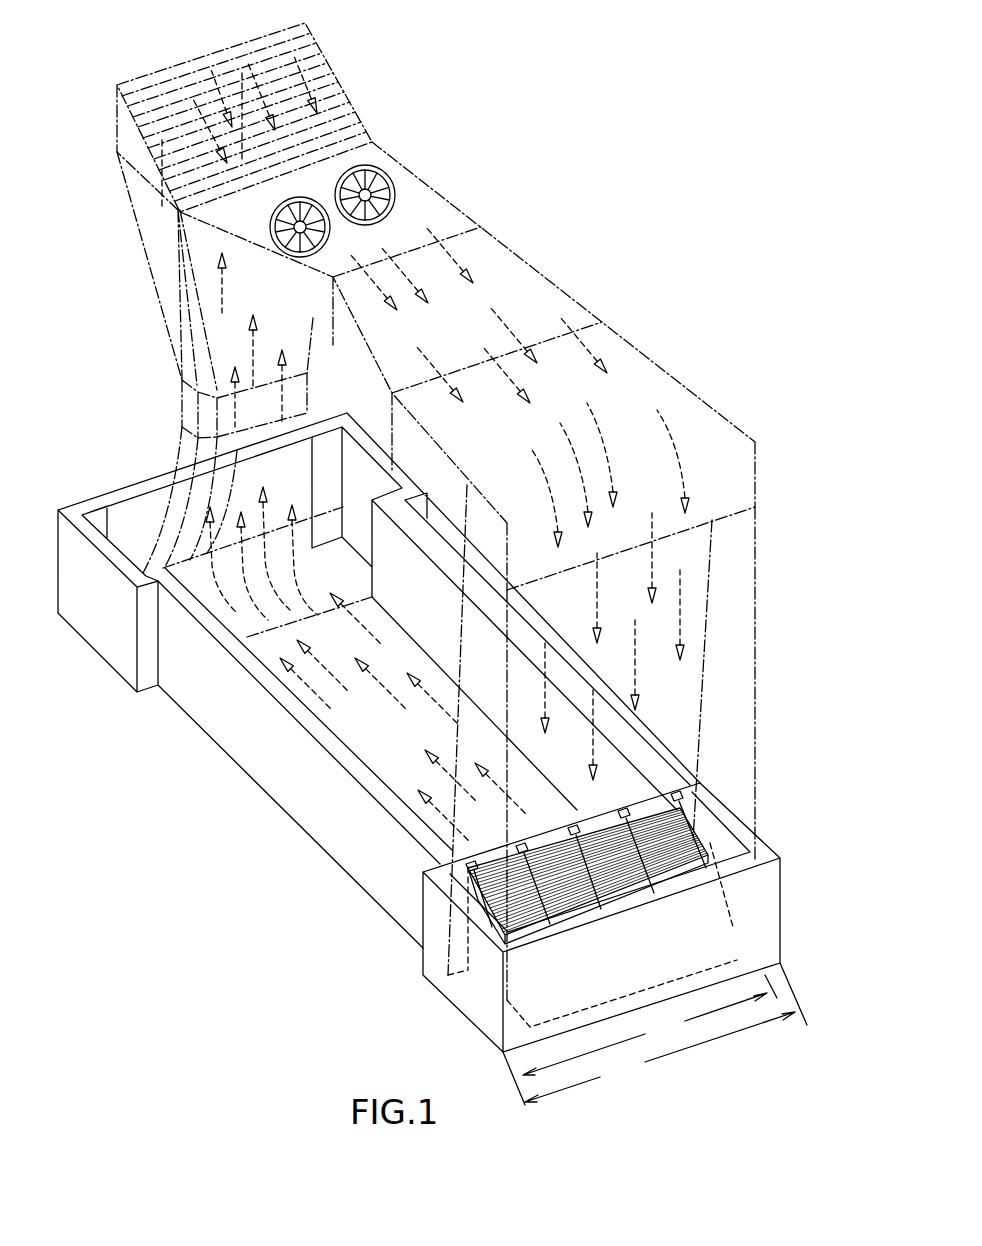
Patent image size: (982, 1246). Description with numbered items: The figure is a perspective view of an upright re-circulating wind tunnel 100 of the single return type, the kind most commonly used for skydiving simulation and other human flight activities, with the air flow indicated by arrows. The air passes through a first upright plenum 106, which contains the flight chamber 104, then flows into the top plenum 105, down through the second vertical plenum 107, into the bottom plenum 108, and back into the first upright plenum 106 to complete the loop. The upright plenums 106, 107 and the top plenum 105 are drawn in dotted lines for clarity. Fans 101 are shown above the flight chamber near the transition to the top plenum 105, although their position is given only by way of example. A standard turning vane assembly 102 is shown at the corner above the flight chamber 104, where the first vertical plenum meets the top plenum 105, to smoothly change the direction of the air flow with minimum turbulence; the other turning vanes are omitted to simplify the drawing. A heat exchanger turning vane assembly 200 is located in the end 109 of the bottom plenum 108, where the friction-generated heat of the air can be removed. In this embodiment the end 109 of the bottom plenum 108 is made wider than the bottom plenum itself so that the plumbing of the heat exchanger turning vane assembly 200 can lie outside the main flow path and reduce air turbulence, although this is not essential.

The re-circulating wind tunnel 100 is at (682, 284).
The fans 101 is at (370, 187).
The turning vane assembly 102 is at (333, 70).
The flight chamber 104 is at (185, 400).
The top plenum 105 is at (678, 363).
The first upright plenum 106 is at (157, 292).
The second vertical plenum 107 is at (755, 680).
The bottom plenum 108 is at (317, 805).
The end of the bottom plenum 109 is at (435, 922).
The heat exchanger turning vane assembly 200 is at (707, 832).